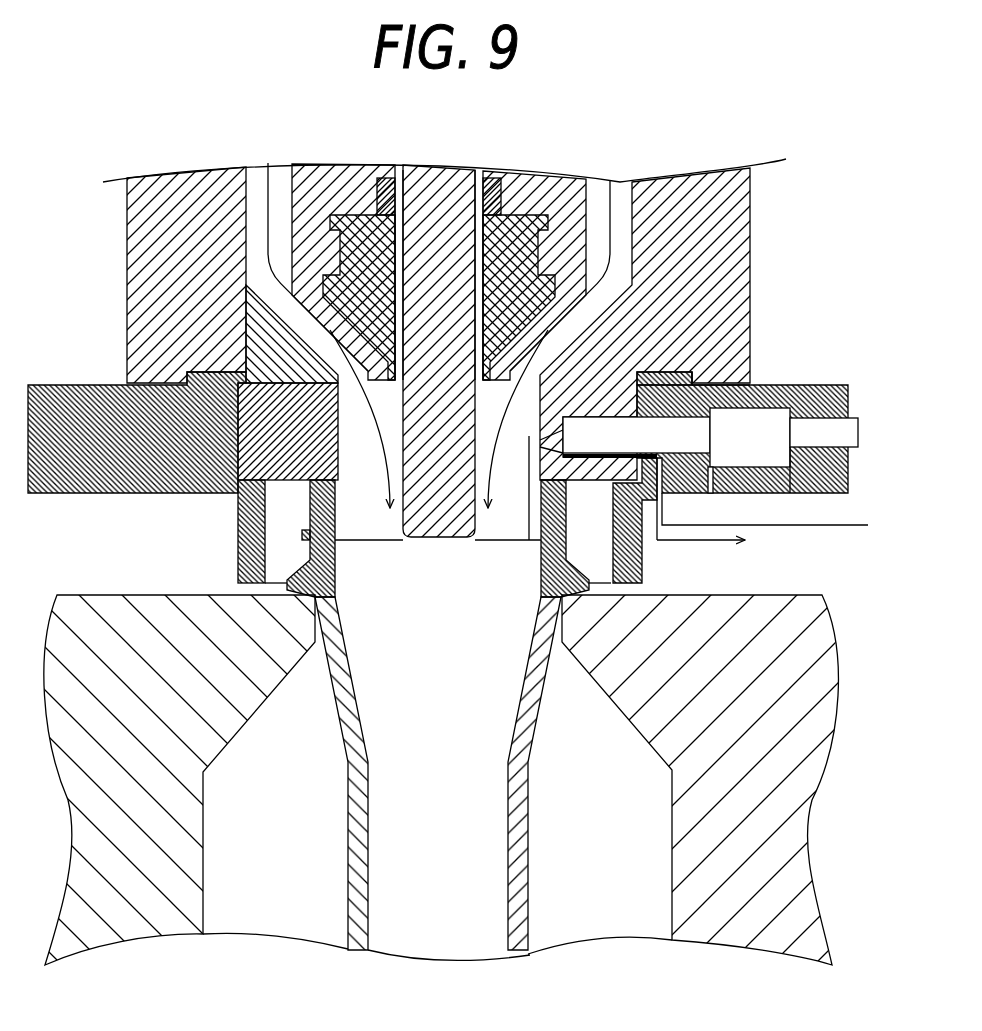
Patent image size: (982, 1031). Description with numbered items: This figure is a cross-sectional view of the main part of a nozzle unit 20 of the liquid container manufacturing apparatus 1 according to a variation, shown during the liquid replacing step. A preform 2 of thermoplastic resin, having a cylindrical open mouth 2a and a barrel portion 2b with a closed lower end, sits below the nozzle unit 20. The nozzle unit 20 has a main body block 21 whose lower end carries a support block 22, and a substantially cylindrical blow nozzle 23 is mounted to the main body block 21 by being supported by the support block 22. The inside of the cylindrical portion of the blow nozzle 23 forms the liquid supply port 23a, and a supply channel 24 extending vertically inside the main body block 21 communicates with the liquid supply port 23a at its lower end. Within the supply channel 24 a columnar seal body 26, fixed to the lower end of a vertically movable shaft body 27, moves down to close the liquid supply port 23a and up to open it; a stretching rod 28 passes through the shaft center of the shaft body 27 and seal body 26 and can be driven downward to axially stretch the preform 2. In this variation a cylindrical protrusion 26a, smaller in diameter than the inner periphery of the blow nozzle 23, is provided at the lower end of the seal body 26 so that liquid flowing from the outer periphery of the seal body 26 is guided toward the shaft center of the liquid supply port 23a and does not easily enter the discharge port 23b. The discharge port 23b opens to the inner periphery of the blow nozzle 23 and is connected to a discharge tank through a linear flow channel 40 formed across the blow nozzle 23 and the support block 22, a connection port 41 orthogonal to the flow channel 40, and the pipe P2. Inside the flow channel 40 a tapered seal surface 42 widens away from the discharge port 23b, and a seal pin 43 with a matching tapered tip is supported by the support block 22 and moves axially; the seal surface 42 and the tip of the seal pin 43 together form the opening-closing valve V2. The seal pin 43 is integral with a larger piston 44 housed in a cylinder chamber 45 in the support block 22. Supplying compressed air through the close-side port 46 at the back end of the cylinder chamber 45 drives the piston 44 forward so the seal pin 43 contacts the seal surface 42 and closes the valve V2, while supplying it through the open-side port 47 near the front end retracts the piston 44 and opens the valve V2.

The liquid container manufacturing apparatus 1 is at (788, 118).
The preform 2 is at (566, 562).
The mouth 2a is at (558, 497).
The barrel portion 2b is at (545, 670).
The nozzle unit 20 is at (752, 265).
The main body block 21 is at (720, 294).
The support block 22 is at (125, 482).
The blow nozzle 23 is at (624, 284).
The liquid supply port 23a is at (500, 523).
The discharge port 23b is at (552, 428).
The supply channel 24 is at (258, 178).
The seal body 26 is at (516, 206).
The protrusion 26a is at (497, 380).
The shaft body 27 is at (307, 218).
The stretching rod 28 is at (428, 522).
The flow channel 40 is at (617, 450).
The connection port 41 is at (668, 490).
The seal surface 42 is at (567, 410).
The seal pin 43 is at (670, 385).
The piston 44 is at (815, 408).
The cylinder chamber 45 is at (722, 385).
The close-side port 46 is at (788, 490).
The open-side port 47 is at (712, 490).
The opening-closing valve V2 is at (572, 397).
The pipe P2 is at (850, 527).